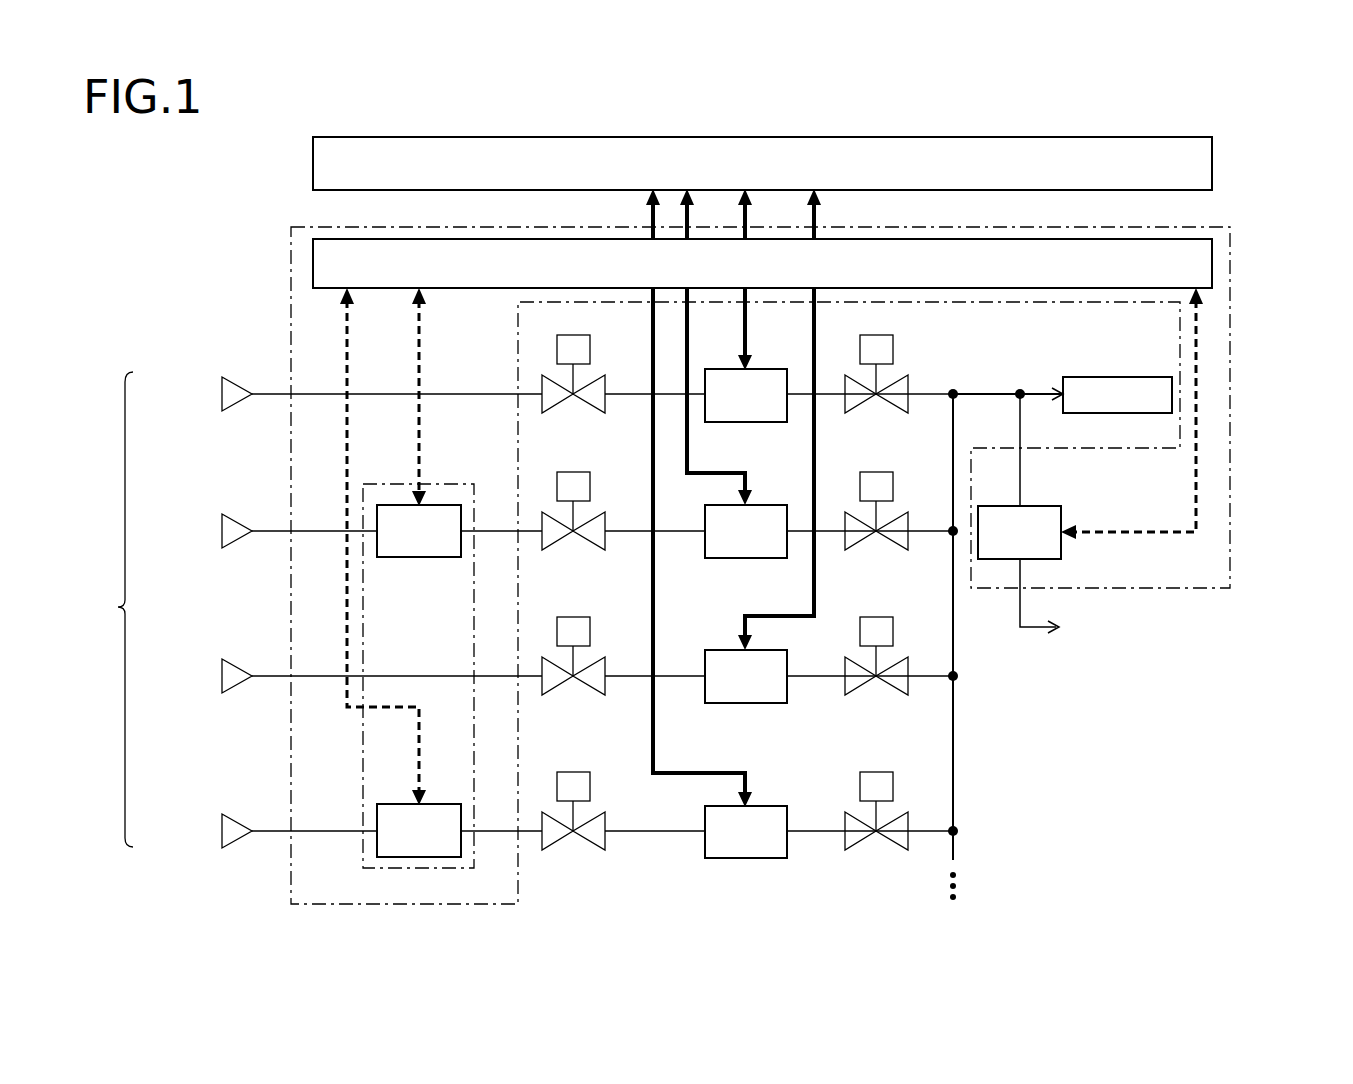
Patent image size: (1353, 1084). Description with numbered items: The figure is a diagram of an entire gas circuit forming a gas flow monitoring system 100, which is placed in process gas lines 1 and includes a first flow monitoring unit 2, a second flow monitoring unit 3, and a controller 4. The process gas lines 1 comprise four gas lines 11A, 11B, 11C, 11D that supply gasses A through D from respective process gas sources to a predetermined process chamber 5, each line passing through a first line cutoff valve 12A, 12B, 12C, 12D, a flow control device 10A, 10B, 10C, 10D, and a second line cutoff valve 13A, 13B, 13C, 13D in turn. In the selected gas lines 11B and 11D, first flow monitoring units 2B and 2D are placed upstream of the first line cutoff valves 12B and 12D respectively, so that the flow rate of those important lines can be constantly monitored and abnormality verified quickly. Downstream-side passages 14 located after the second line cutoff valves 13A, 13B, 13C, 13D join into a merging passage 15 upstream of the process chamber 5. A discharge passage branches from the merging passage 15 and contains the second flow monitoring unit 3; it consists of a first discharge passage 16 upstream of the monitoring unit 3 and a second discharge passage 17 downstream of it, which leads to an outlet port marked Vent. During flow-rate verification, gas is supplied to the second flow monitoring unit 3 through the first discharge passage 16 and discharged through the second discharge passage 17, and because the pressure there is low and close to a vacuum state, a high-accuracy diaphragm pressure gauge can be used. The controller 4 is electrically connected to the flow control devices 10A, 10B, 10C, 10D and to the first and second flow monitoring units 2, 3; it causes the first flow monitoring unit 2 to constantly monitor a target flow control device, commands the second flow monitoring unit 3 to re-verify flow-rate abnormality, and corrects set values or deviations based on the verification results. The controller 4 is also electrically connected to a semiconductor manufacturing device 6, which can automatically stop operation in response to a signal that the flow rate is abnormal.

The process gas lines 1 is at (155, 609).
The first flow monitoring unit 2 is at (462, 484).
The first flow monitoring unit 2B is at (425, 557).
The first flow monitoring unit 2D is at (441, 804).
The second flow monitoring unit 3 is at (1058, 506).
The controller 4 is at (313, 262).
The process chamber 5 is at (1105, 377).
The semiconductor manufacturing device 6 is at (1213, 160).
The flow control device 10A is at (770, 369).
The flow control device 10B is at (770, 505).
The flow control device 10C is at (724, 650).
The flow control device 10D is at (770, 806).
The gas line 11A is at (260, 393).
The gas line 11B is at (260, 530).
The gas line 11C is at (260, 675).
The gas line 11D is at (260, 830).
The first line cutoff valve 12A is at (590, 339).
The first line cutoff valve 12B is at (590, 477).
The first line cutoff valve 12C is at (590, 620).
The first line cutoff valve 12D is at (590, 779).
The second line cutoff valve 13A is at (894, 339).
The second line cutoff valve 13B is at (894, 477).
The second line cutoff valve 13C is at (894, 620).
The second line cutoff valve 13D is at (894, 779).
The downstream-side passages 14 is at (954, 730).
The merging passage 15 is at (990, 394).
The first discharge passage 16 is at (1022, 464).
The second discharge passage 17 is at (1019, 605).
The gas flow monitoring system 100 is at (1236, 369).